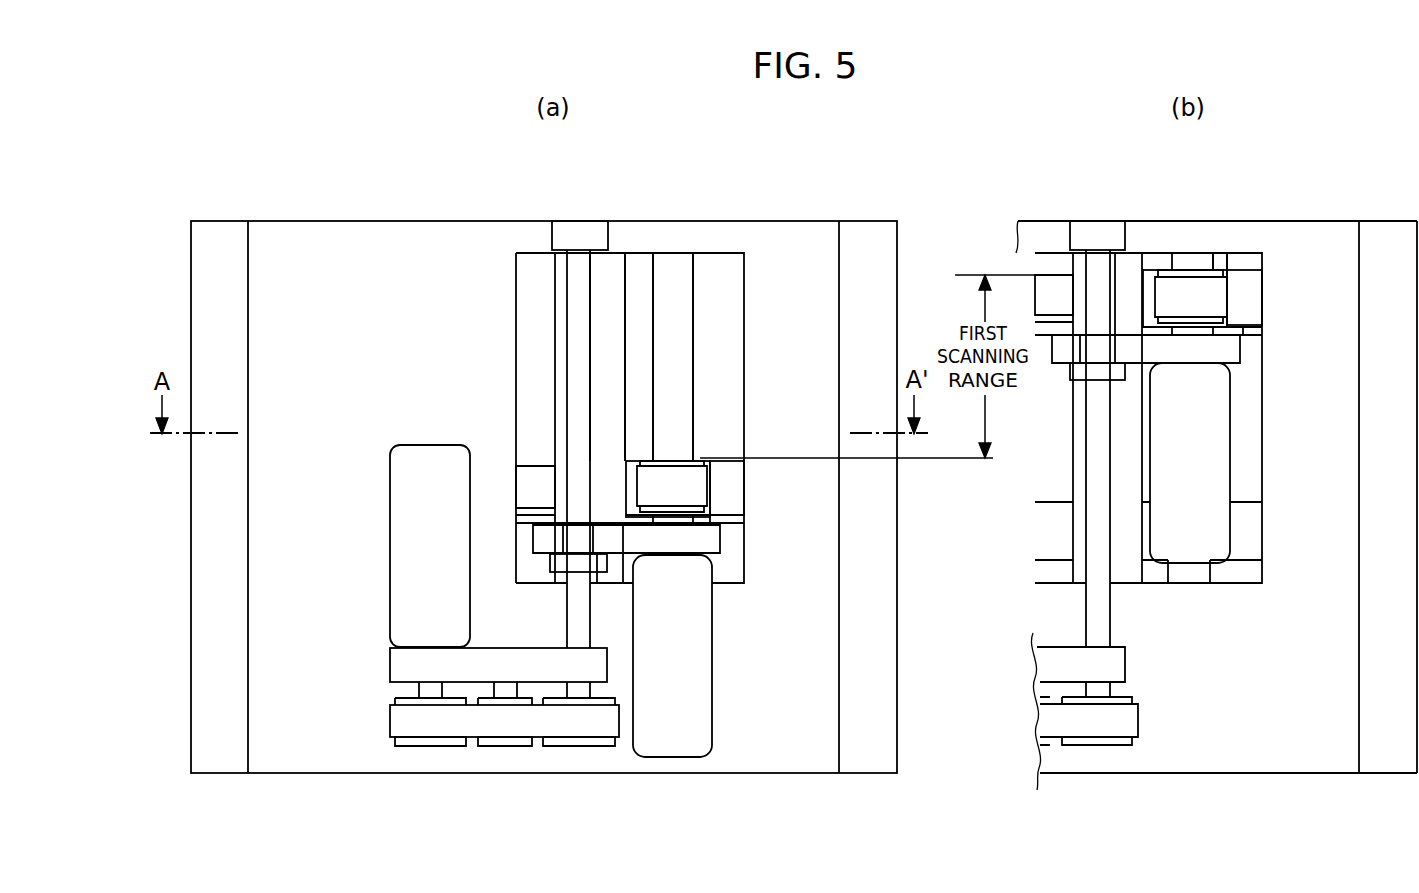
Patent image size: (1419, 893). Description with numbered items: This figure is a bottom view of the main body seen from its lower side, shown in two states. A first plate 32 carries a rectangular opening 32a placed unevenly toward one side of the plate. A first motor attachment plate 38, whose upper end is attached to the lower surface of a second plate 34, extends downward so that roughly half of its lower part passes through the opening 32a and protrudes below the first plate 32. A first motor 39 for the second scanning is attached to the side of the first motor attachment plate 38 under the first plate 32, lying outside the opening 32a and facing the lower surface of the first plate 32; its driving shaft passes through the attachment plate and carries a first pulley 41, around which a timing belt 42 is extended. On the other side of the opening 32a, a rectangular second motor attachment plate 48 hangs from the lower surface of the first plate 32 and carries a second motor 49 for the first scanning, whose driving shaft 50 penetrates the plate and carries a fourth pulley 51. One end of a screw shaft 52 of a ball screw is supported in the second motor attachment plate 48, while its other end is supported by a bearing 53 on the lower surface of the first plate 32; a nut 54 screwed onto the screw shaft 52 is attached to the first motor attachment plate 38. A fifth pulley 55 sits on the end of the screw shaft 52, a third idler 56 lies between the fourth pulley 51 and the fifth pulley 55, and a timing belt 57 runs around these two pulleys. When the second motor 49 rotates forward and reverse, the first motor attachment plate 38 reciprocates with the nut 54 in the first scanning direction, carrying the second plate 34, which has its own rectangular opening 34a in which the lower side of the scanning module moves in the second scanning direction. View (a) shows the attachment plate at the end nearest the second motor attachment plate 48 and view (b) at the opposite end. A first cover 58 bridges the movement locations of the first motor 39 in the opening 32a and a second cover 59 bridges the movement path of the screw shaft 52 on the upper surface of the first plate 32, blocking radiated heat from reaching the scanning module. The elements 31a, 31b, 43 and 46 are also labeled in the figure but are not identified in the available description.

The first side wall 31a is at (213, 232).
The second side wall 31b is at (866, 232).
The first plate 32 is at (373, 232).
The rectangular opening 32a is at (517, 315).
The second plate 34 is at (731, 574).
The rectangular opening 34a is at (1248, 490).
The first motor attachment plate 38 is at (722, 538).
The first motor 39 is at (712, 690).
The first pulley 41 is at (1215, 252).
The timing belt 42 is at (533, 465).
The yoke 43 is at (632, 462).
The spacer 46 is at (730, 462).
The second motor attachment plate 48 is at (390, 663).
The second motor 49 is at (390, 527).
The driving shaft 50 is at (419, 690).
The fourth pulley 51 is at (424, 748).
The screw shaft 52 is at (577, 352).
The bearing 53 is at (580, 233).
The nut 54 is at (550, 562).
The fifth pulley 55 is at (585, 748).
The third idler 56 is at (520, 748).
The timing belt 57 is at (472, 748).
The first cover 58 is at (693, 303).
The second cover 59 is at (625, 272).